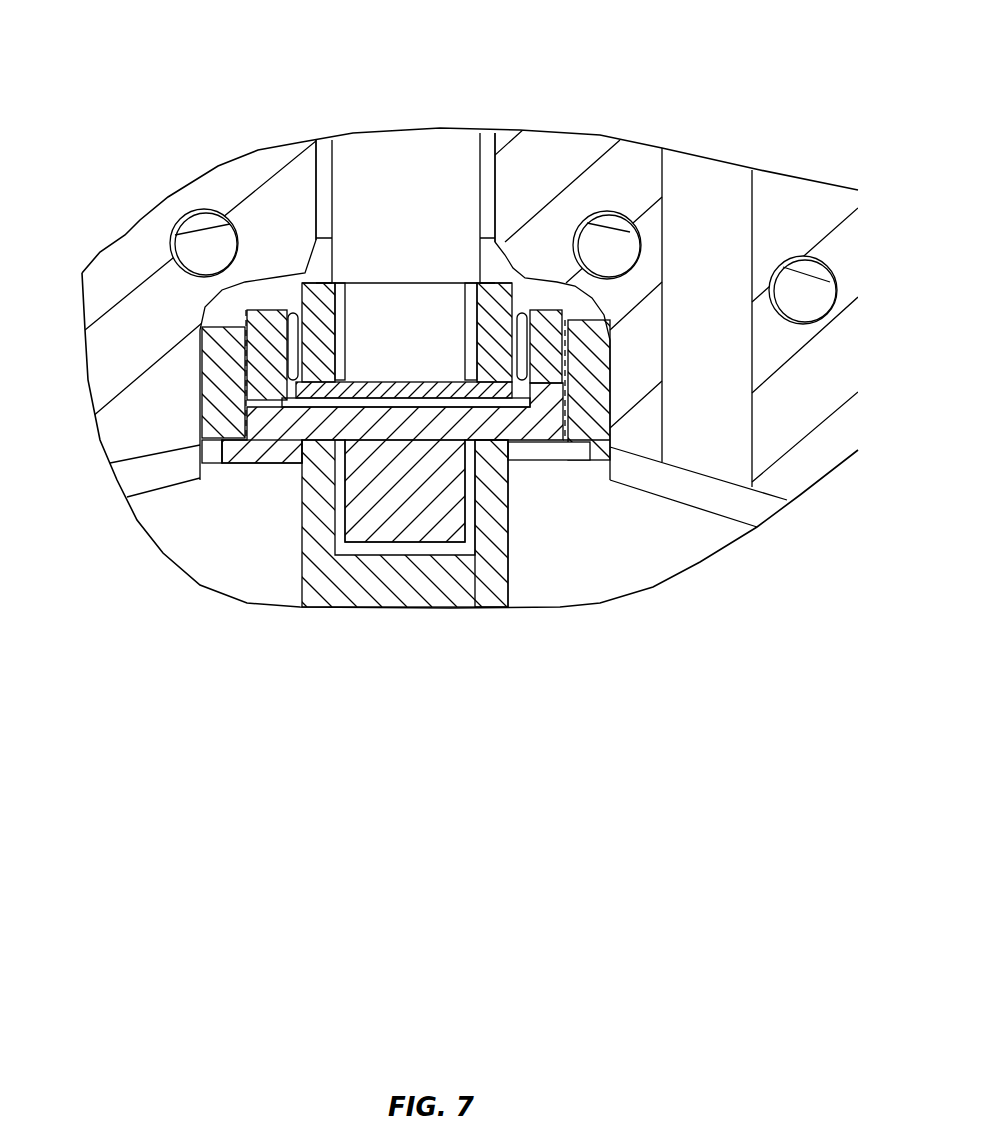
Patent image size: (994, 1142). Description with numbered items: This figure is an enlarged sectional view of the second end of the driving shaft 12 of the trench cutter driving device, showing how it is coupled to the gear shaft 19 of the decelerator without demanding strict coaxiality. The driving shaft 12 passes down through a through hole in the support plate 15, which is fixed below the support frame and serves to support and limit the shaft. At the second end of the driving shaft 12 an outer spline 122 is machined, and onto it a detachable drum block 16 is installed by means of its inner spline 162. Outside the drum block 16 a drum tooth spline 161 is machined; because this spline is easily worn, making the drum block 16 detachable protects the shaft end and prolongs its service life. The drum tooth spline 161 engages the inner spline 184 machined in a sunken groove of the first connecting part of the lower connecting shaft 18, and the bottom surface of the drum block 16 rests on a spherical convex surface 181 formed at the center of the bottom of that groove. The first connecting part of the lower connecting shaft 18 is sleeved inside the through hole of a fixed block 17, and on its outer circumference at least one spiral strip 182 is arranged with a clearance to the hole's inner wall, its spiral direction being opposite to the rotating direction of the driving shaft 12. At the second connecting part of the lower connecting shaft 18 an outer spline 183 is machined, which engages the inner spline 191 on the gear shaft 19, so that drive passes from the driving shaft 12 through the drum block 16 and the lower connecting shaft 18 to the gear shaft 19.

The driving shaft 12 is at (415, 168).
The support plate 15 is at (567, 167).
The drum block 16 is at (330, 306).
The drum tooth spline 161 is at (288, 358).
The inner spline 162 is at (336, 284).
The fixed block 17 is at (200, 330).
The outer spline 122 is at (462, 315).
The lower connecting shaft 18 is at (292, 420).
The spherical convex surface 181 is at (500, 462).
The spiral strip 182 is at (245, 420).
The outer spline 183 is at (345, 535).
The inner spline 184 is at (222, 417).
The gear shaft 19 is at (470, 580).
The inner spline 191 is at (478, 520).